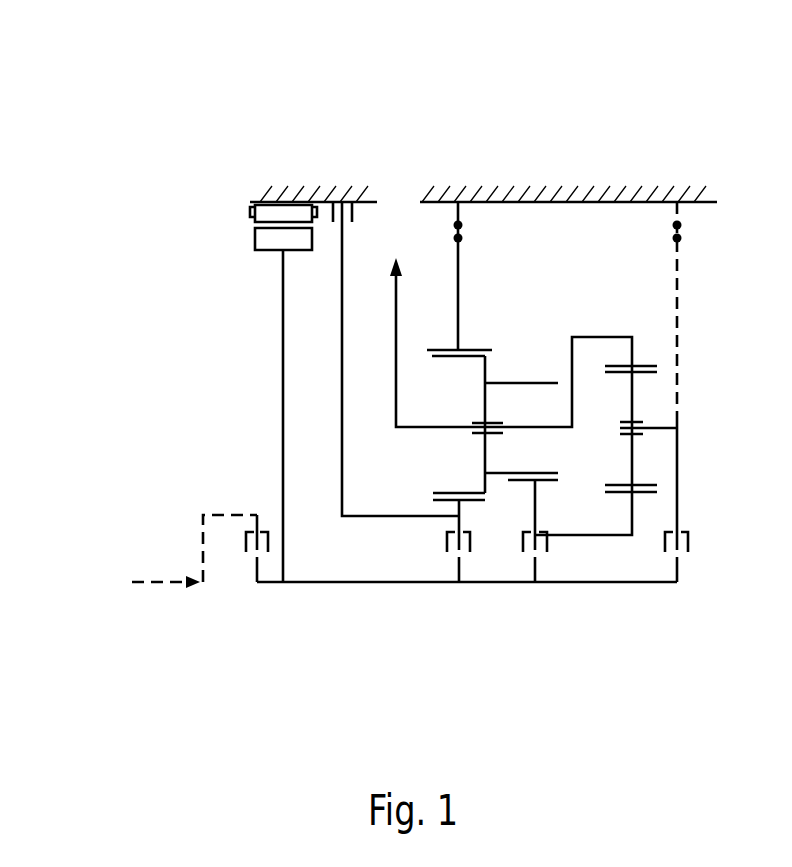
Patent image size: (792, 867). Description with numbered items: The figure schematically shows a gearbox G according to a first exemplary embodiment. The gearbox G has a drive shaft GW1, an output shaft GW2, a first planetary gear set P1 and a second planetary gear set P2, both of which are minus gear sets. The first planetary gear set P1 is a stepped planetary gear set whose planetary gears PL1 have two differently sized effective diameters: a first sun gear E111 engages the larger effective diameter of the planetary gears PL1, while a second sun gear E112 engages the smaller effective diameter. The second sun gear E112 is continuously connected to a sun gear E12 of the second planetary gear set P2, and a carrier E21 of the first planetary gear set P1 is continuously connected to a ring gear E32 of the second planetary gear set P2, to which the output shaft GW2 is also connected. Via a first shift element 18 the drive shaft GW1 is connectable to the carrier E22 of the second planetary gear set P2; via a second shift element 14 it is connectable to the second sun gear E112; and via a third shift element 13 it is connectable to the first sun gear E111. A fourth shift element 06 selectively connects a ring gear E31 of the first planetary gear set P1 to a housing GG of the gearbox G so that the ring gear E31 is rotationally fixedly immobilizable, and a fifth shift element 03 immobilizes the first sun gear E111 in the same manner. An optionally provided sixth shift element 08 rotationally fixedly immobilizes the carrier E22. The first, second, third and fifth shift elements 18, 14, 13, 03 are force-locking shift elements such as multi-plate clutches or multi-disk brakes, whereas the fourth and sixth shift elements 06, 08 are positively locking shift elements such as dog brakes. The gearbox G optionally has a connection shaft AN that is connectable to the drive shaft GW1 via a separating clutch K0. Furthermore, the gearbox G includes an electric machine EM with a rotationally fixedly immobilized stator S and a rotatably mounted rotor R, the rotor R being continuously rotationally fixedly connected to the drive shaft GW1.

The housing GG is at (320, 192).
The fifth shift element 03 is at (360, 213).
The fourth shift element 06 is at (454, 222).
The ring gear of the first planetary gear set E31 is at (477, 349).
The planetary gears PL1 is at (522, 381).
The ring gear of the second planetary gear set E32 is at (643, 364).
The sixth shift element 08 is at (670, 218).
The carrier of the second planetary gear set E22 is at (657, 425).
The electric machine EM is at (128, 193).
The stator S is at (244, 212).
The rotor R is at (244, 239).
The output shaft GW2 is at (395, 322).
The gearbox G is at (220, 387).
The connection shaft AN is at (153, 587).
The separating clutch K0 is at (248, 557).
The drive shaft GW1 is at (320, 586).
The carrier of the first planetary gear set E21 is at (430, 431).
The third shift element 13 is at (452, 566).
The first sun gear of the first planetary gear set E111 is at (471, 501).
The second shift element 14 is at (538, 588).
The second sun gear of the first planetary gear set E112 is at (548, 485).
The sun gear of the second planetary gear set E12 is at (642, 496).
The first shift element 18 is at (683, 572).
The first planetary gear set P1 is at (483, 592).
The second planetary gear set P2 is at (632, 592).